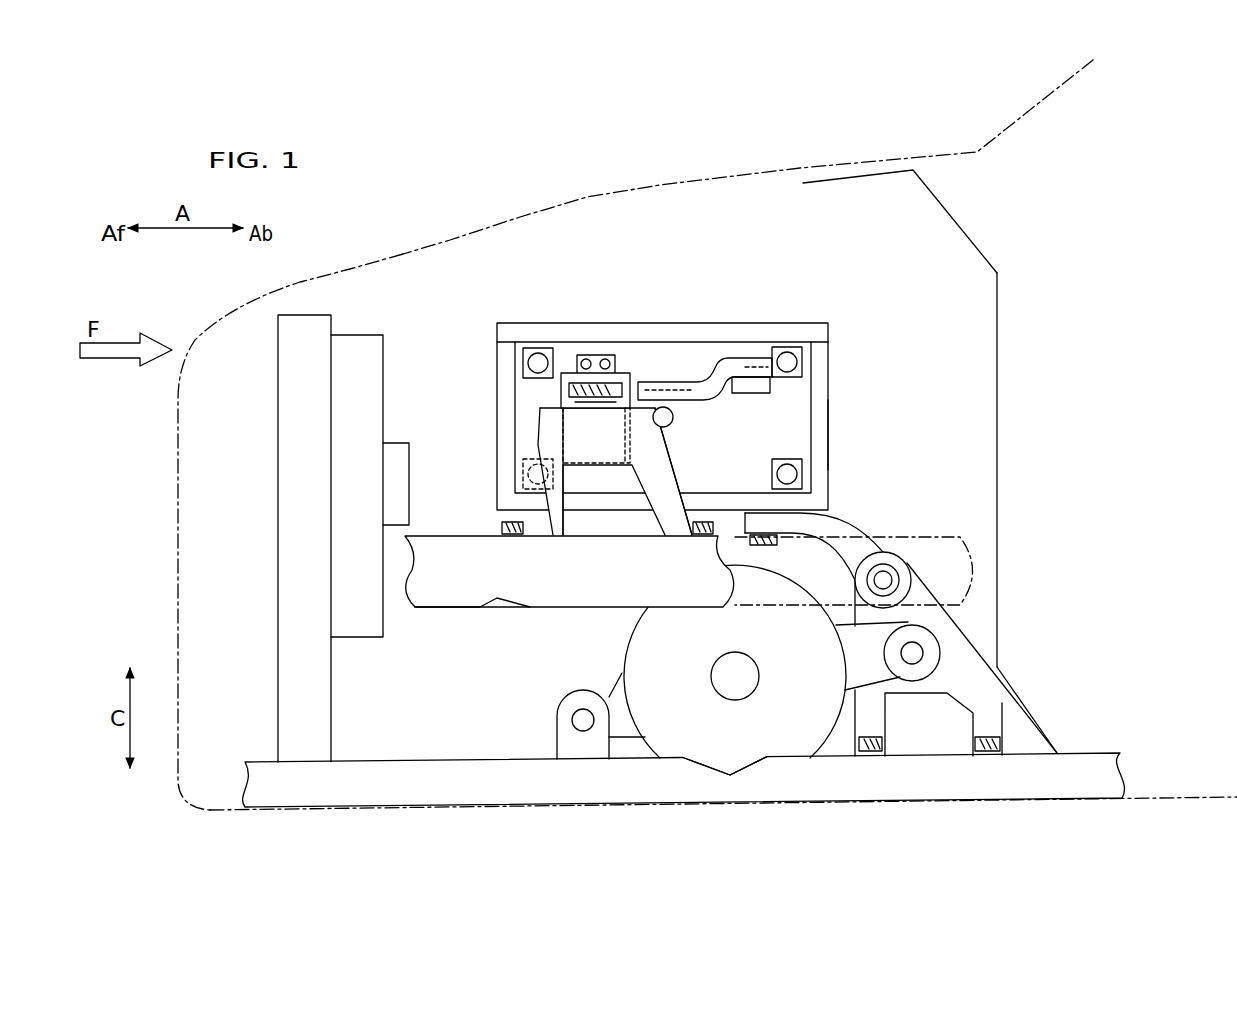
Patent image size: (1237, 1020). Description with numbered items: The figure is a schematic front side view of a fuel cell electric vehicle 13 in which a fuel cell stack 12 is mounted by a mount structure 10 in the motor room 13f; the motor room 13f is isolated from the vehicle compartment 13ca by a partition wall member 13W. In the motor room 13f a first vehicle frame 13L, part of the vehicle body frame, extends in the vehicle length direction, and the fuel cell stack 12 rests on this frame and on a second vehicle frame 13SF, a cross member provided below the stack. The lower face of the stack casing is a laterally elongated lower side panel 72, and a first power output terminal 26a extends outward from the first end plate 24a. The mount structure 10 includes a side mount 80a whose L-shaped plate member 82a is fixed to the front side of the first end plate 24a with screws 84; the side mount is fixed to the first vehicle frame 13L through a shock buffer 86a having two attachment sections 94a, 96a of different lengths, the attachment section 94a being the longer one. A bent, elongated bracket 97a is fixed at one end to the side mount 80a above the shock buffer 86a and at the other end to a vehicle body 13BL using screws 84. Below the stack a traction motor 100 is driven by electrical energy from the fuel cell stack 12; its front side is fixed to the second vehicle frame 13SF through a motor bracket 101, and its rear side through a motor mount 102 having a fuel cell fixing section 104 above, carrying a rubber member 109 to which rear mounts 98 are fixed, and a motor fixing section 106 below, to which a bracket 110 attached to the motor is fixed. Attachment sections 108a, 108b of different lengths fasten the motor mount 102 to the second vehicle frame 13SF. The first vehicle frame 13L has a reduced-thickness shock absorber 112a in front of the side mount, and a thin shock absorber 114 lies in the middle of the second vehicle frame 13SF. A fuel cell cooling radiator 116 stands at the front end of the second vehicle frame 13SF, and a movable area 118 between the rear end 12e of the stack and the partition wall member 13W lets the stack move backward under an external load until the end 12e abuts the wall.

The fuel cell electric vehicle 13 is at (659, 183).
The motor room 13f is at (540, 248).
The vehicle compartment 13ca is at (1030, 315).
The partition wall member 13W is at (997, 360).
The movable area 118 is at (975, 428).
The fuel cell cooling radiator 116 is at (290, 375).
The second vehicle frame 13SF is at (381, 782).
The traction motor 100 is at (627, 647).
The thin shock absorber 114 is at (720, 787).
The motor bracket 101 is at (623, 725).
The motor mount 102 is at (960, 657).
The attachment section 108a is at (877, 725).
The attachment section 108b is at (997, 725).
The bracket 110 is at (858, 664).
The motor fixing section 106 is at (925, 636).
The fuel cell stack 12 is at (804, 312).
The side mount 80a is at (626, 355).
The rear end of the fuel cell stack 12e is at (830, 437).
The plate member 82a is at (603, 356).
The screws 84 is at (583, 356).
The first end plate 24a is at (752, 350).
The vehicle body 13BL is at (753, 392).
The lower side panel 72 is at (753, 508).
The attachment section 96a is at (561, 504).
The attachment section 94a is at (648, 508).
The first power output terminal 26a is at (652, 417).
The shock buffer 86a is at (627, 451).
The bracket 97a is at (679, 398).
The rear mounts 98 is at (846, 560).
The fuel cell fixing section 104 is at (888, 581).
The rubber member 109 is at (889, 568).
The mount structure 10 is at (935, 539).
The first vehicle frame 13L is at (436, 602).
The shock absorber 112a is at (513, 608).